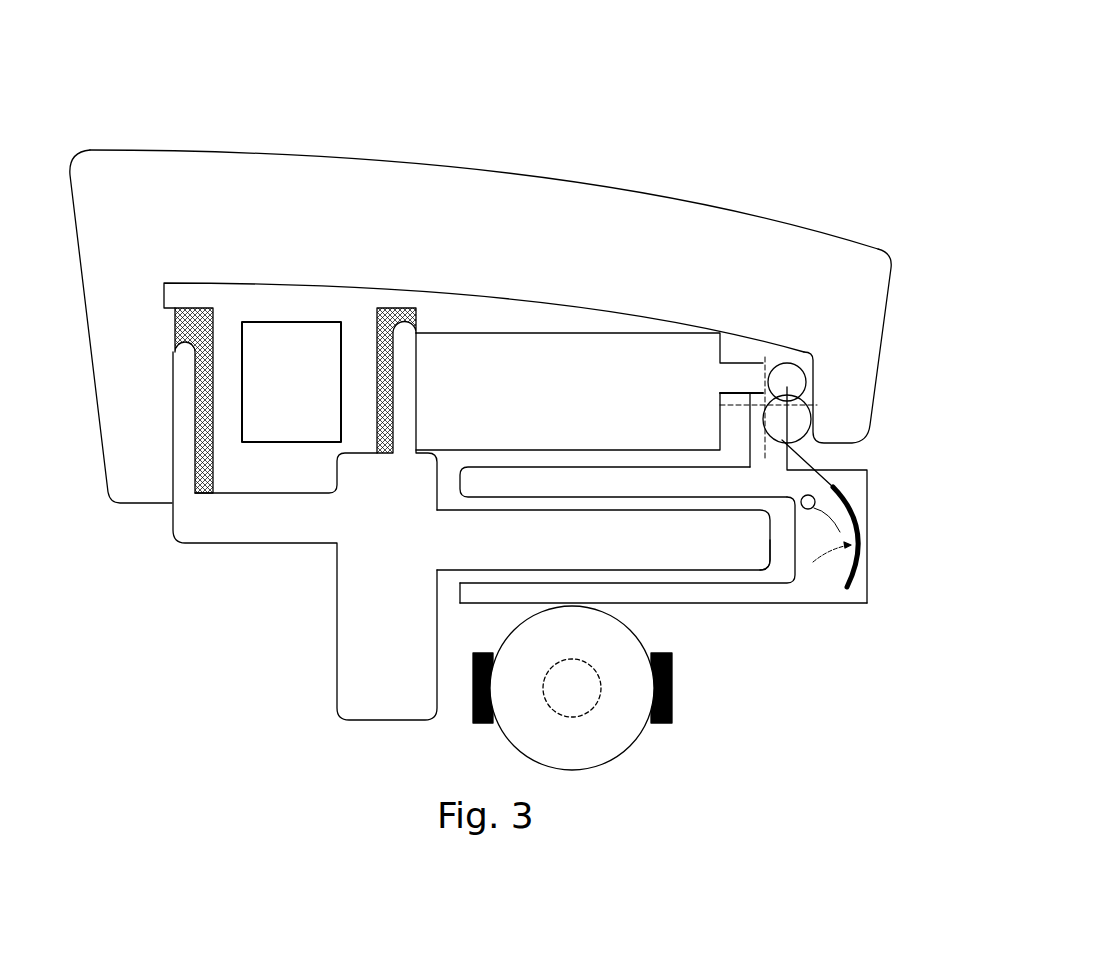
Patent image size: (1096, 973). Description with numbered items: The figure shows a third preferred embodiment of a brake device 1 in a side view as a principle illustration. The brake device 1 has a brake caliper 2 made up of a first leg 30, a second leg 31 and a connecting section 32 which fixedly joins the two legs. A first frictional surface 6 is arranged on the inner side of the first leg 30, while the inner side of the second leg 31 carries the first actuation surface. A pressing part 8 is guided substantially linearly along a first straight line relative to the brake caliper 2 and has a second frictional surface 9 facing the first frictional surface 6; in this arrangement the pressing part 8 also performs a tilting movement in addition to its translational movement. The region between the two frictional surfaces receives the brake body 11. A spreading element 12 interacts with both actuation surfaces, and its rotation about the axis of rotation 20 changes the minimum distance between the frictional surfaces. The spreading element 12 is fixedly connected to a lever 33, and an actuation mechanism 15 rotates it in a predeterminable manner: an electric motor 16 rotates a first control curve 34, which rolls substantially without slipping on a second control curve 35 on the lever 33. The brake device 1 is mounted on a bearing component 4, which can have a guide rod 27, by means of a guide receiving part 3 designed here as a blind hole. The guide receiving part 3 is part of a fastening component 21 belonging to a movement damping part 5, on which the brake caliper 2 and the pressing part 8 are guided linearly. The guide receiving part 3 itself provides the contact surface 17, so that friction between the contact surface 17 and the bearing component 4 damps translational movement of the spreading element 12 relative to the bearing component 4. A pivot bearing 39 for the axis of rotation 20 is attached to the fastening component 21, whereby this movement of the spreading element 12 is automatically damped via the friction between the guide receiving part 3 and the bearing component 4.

The brake device 1 is at (693, 90).
The brake caliper 2 is at (323, 187).
The guide receiving part 3 is at (663, 625).
The fastening component 21 is at (727, 593).
The bearing component 4 is at (340, 652).
The movement damping part 5 is at (803, 580).
The first frictional surface 6 is at (218, 472).
The pressing part 8 is at (508, 355).
The second frictional surface 9 is at (373, 337).
The brake body 11 is at (277, 320).
The spreading element 12 is at (780, 417).
The actuation mechanism 15 is at (872, 548).
The electric motor 16 is at (617, 727).
The contact surface 17 is at (507, 493).
The axis of rotation 20 is at (787, 387).
The guide rod 27 is at (763, 565).
The first leg 30 is at (133, 392).
The second leg 31 is at (843, 355).
The connecting section 32 is at (203, 185).
The lever 33 is at (805, 457).
The first control curve 34 is at (853, 507).
The second control curve 35 is at (833, 518).
The pivot bearing 39 is at (773, 453).